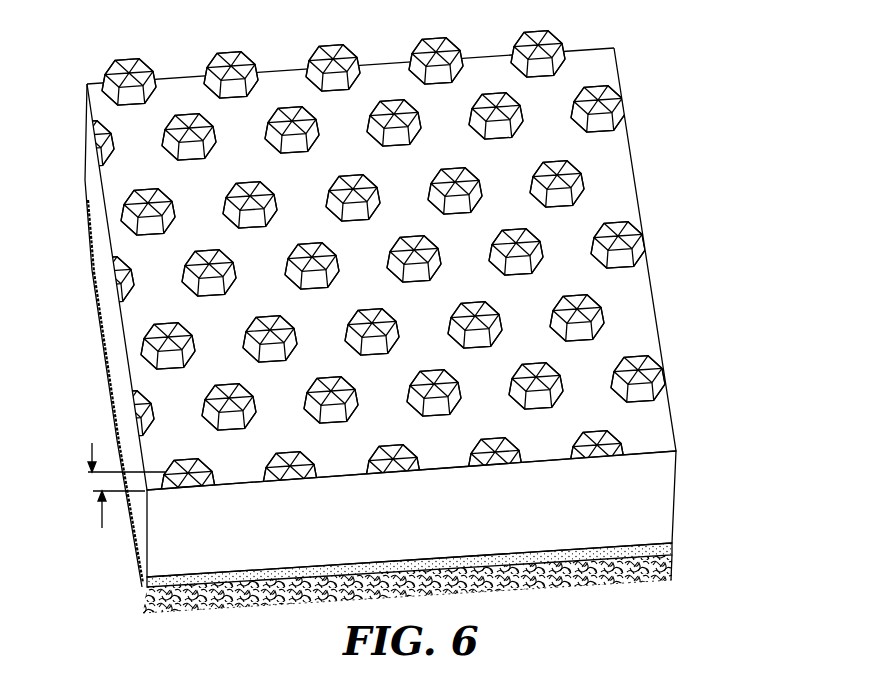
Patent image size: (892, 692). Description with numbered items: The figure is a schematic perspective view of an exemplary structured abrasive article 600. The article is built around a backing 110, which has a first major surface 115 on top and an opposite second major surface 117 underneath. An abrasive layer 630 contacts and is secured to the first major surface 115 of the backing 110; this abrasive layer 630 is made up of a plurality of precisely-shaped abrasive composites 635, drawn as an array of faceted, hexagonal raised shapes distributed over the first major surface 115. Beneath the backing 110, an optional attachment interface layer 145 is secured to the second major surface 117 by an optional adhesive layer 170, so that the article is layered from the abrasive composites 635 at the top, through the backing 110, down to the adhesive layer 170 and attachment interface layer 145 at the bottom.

The structured abrasive article 600 is at (636, 35).
The precisely-shaped abrasive composites 635 is at (642, 221).
The first major surface 115 is at (657, 451).
The backing 110 is at (675, 497).
The second major surface 117 is at (671, 553).
The adhesive layer 170 is at (143, 587).
The attachment interface layer 145 is at (193, 608).
The abrasive layer 630 is at (92, 443).